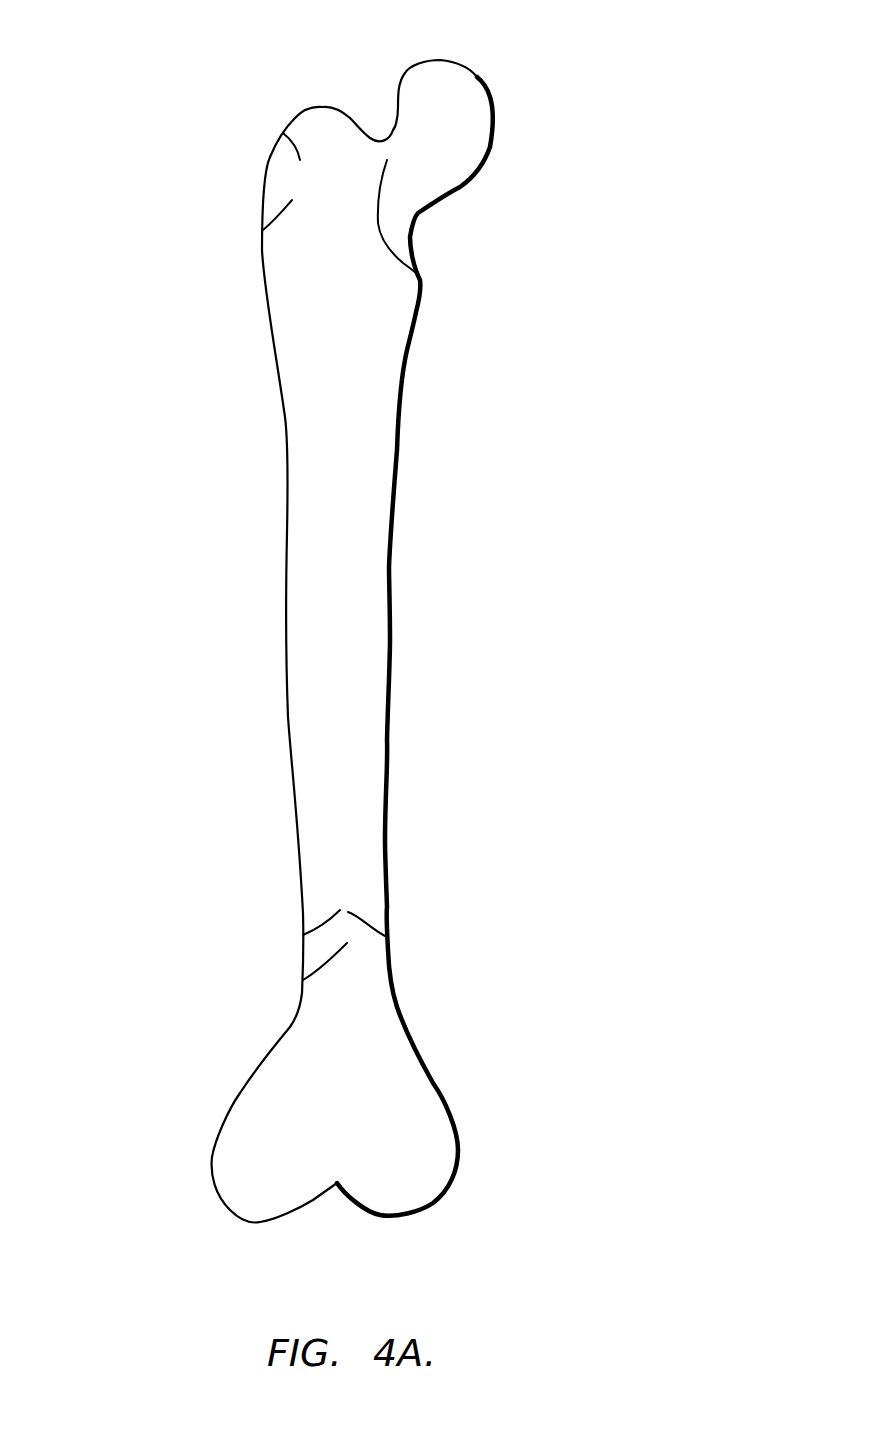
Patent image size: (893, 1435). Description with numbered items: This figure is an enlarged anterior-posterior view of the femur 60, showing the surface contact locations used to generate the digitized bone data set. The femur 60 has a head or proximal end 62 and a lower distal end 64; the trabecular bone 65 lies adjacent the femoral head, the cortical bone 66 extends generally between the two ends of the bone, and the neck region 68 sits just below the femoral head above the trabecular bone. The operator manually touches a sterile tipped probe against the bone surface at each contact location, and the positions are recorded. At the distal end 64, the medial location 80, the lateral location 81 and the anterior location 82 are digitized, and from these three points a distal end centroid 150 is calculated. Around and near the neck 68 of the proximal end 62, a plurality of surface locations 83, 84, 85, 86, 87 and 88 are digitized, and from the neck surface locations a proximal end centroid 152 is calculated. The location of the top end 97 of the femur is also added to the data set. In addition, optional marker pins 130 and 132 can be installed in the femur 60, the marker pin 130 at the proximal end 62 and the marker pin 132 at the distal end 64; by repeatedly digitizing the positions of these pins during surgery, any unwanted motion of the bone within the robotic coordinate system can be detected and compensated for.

The femur 60 is at (317, 636).
The proximal end 62 is at (520, 104).
The distal end 64 is at (502, 1217).
The trabecular bone 65 is at (283, 133).
The cortical bone 66 is at (318, 708).
The neck region 68 is at (366, 105).
The medial location 80 is at (303, 935).
The lateral location 81 is at (387, 915).
The anterior location 82 is at (300, 912).
The surface location 83 is at (273, 142).
The surface location 84 is at (263, 178).
The surface location 85 is at (437, 177).
The surface location 86 is at (407, 193).
The surface location 87 is at (413, 147).
The surface location 88 is at (420, 277).
The top end 97 is at (318, 107).
The marker pin 130 is at (263, 230).
The marker pin 132 is at (303, 980).
The distal end centroid 150 is at (390, 937).
The proximal end centroid 152 is at (443, 127).